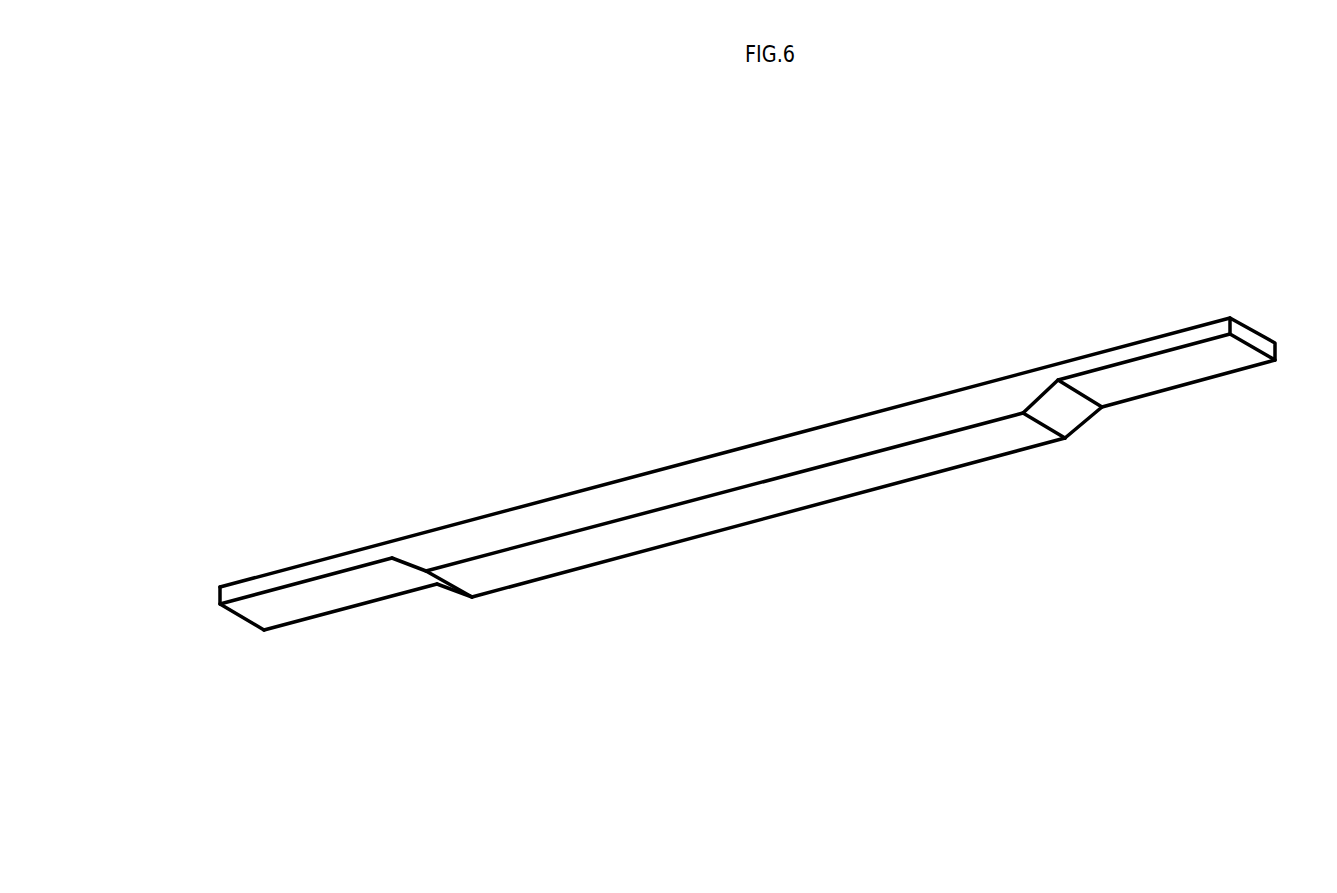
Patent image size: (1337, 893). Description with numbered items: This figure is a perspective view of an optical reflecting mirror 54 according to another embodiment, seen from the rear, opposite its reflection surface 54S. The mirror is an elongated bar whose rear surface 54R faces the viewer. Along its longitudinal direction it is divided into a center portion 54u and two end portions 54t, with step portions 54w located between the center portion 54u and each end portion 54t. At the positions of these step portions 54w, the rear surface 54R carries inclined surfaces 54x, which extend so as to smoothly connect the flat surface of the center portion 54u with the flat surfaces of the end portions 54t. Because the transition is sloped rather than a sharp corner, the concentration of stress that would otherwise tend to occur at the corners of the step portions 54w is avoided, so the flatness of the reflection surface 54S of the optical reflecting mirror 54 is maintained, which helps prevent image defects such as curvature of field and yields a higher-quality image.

The optical reflecting mirror 54 is at (753, 444).
The reflection surface 54S is at (743, 420).
The rear surface 54R is at (747, 583).
The end portions 54t is at (431, 605).
The center portion 54u is at (1061, 452).
The step portions 54w is at (468, 618).
The inclined surfaces 54x is at (447, 597).